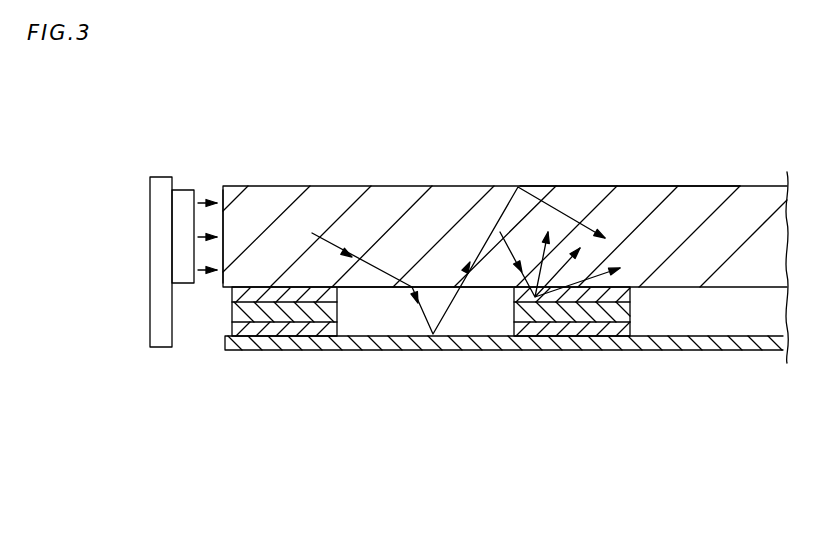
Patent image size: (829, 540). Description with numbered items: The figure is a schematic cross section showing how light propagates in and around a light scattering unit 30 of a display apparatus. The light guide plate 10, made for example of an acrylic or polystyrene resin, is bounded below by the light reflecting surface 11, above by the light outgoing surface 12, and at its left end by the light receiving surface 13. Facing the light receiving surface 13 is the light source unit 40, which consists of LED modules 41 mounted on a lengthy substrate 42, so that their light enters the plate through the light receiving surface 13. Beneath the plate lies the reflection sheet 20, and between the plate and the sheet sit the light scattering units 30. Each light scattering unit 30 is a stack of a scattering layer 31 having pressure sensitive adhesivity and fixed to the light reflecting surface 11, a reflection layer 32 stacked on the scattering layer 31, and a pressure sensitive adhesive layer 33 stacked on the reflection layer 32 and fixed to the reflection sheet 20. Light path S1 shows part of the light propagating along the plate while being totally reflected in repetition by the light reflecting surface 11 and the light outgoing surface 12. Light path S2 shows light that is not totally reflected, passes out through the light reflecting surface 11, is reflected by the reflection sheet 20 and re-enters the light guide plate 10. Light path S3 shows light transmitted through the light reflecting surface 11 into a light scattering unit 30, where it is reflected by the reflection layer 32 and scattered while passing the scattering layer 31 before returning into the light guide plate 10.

The light guide plate 10 is at (397, 198).
The light reflecting surface 11 is at (480, 290).
The light outgoing surface 12 is at (630, 187).
The light receiving surface 13 is at (222, 203).
The reflection sheet 20 is at (348, 349).
The light scattering unit 30 is at (145, 378).
The scattering layer 31 is at (232, 294).
The reflection layer 32 is at (237, 314).
The pressure sensitive adhesive layer 33 is at (260, 330).
The light source unit 40 is at (212, 98).
The LED module 41 is at (183, 193).
The substrate 42 is at (160, 180).
The light totally reflected inside the light guide plate S1 is at (388, 272).
The light reflected by the reflection sheet S2 is at (430, 320).
The light incident on the light scattering unit S3 is at (533, 290).